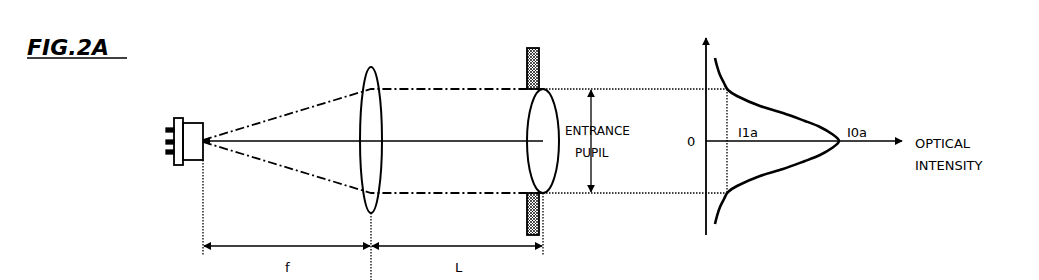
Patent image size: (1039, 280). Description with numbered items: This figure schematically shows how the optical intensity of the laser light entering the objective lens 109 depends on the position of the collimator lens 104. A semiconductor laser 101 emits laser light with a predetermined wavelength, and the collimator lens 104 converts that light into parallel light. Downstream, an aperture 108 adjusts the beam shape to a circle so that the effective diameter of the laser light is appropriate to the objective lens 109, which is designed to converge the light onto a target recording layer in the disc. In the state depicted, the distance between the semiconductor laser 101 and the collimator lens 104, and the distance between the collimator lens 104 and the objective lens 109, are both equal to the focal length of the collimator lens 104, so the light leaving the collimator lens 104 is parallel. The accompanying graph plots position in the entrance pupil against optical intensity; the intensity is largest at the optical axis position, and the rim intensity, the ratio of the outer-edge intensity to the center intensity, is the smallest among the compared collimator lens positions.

The semiconductor laser 101 is at (193, 121).
The collimator lens 104 is at (385, 81).
The aperture 108 is at (541, 61).
The objective lens 109 is at (560, 100).